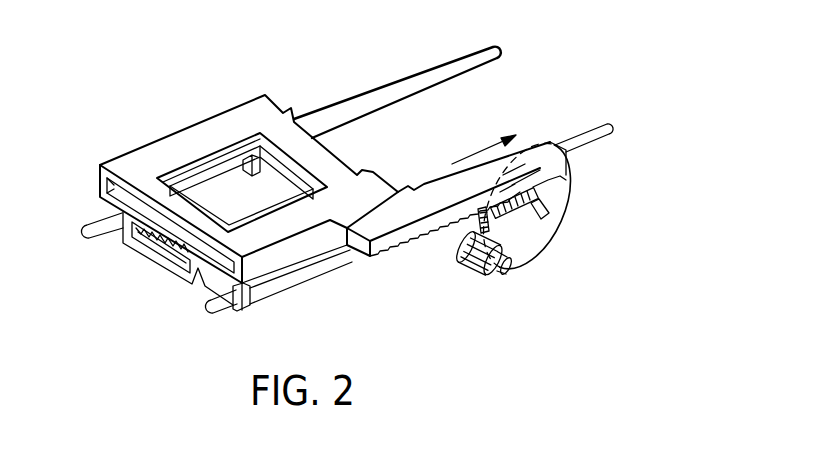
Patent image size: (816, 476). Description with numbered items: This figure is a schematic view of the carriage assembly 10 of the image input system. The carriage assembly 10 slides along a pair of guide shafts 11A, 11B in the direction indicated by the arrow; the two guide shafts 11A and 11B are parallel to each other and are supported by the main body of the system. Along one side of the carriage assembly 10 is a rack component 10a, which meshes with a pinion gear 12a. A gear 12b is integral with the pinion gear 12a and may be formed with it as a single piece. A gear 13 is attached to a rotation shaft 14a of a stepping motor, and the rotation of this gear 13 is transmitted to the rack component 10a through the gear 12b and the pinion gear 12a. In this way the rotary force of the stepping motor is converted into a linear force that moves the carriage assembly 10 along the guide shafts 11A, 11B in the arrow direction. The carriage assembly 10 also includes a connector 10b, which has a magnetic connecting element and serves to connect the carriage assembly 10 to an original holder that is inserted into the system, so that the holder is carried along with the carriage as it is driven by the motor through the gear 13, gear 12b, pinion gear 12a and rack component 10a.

The carriage assembly 10 is at (188, 138).
The rack component 10a is at (421, 193).
The connector 10b is at (149, 262).
The guide shaft 11A is at (423, 74).
The guide shaft 11B is at (225, 308).
The pinion gear 12a is at (569, 182).
The gear 12b is at (534, 242).
The gear 13 is at (483, 277).
The rotation shaft 14a is at (507, 272).